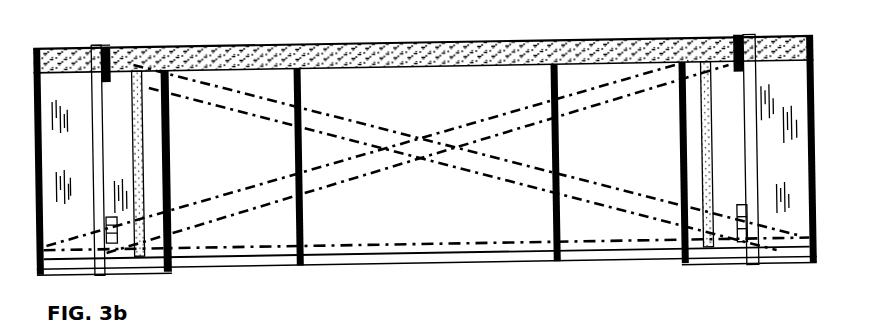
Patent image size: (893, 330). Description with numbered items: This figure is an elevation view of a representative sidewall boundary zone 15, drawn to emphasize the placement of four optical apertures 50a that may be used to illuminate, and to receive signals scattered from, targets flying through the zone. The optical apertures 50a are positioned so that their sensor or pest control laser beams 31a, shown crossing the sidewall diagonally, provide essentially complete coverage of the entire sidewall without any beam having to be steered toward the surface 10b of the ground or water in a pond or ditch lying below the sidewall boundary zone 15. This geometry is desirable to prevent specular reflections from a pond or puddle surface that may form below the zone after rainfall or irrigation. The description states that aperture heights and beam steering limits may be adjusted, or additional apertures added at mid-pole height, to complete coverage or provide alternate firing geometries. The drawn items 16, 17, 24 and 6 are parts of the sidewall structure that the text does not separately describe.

The sidewall boundary zone 15 is at (298, 18).
The lower flange of top chord 16 is at (488, 62).
The top chord 17 is at (476, 103).
The vertical post 24 is at (149, 100).
The optical aperture 50a is at (129, 50).
The end panel 6 is at (92, 98).
The pest control laser beam 31a is at (490, 44).
The surface of the ground or water 10b is at (492, 189).